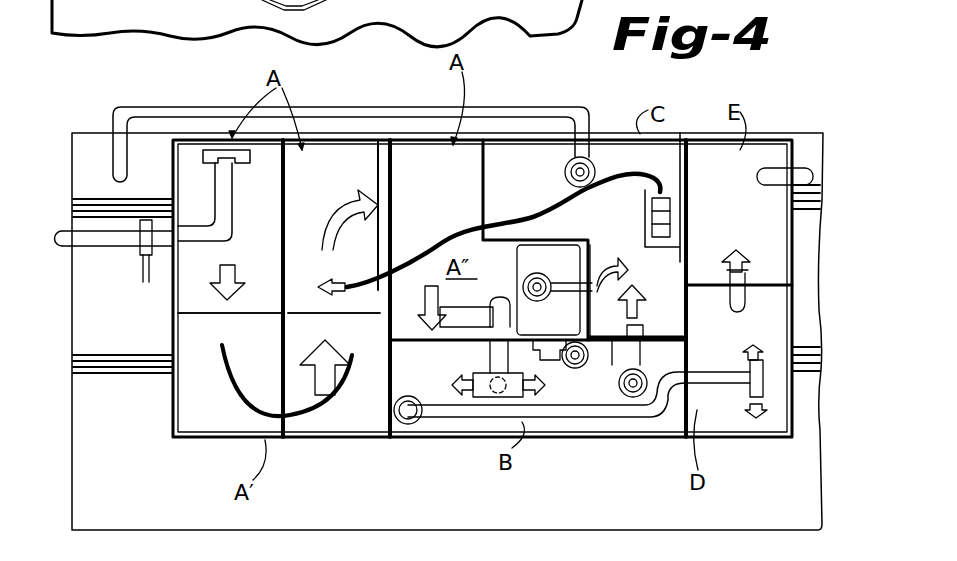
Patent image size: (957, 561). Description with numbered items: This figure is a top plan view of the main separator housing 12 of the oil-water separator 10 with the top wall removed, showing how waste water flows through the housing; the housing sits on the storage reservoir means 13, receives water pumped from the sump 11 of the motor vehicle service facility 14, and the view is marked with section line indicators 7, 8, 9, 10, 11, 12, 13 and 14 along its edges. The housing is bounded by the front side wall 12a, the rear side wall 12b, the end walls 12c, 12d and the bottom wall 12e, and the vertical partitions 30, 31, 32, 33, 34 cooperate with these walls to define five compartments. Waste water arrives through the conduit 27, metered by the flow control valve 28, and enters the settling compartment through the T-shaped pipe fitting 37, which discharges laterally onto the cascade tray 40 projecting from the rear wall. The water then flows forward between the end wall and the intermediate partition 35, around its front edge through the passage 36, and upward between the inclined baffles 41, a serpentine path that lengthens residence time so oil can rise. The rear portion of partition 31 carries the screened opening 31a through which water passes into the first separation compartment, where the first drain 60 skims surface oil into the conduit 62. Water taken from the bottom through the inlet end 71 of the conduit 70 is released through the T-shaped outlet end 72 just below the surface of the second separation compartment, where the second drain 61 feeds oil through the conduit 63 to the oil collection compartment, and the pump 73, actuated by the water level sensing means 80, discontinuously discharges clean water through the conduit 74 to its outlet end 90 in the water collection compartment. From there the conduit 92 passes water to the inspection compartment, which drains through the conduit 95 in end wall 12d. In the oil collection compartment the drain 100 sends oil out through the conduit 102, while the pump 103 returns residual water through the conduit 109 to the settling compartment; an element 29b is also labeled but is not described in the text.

The section line 7- 7 is at (185, 460).
The section line 8- 8 is at (295, 460).
The section line 9- 9 is at (441, 455).
The oil-water separator 10 is at (593, 483).
The sump 11 is at (605, 460).
The main separator housing 12 is at (171, 432).
The front side wall 12a is at (272, 438).
The rear side wall 12b is at (356, 133).
The left-hand end wall 12c is at (172, 302).
The right-hand end wall 12d is at (775, 270).
The bottom wall 12e is at (455, 175).
The storage reservoir means 13 is at (858, 227).
The motor vehicle service facility 14 is at (858, 430).
The conduit 27 is at (93, 240).
The flow control valve 28 is at (140, 240).
The conduit 29b is at (150, 200).
The partition 30 is at (482, 226).
The partition 31 is at (378, 392).
The screened opening 31a is at (372, 158).
The partition 32 is at (458, 344).
The partition 33 is at (672, 300).
The partition 34 is at (748, 300).
The intermediate partition 35 is at (262, 262).
The passage 36 is at (256, 400).
The T-shaped pipe fitting 37 is at (247, 152).
The cascade tray 40 is at (236, 168).
The baffles 41 is at (258, 349).
The first drain 60 is at (555, 278).
The second drain 61 is at (646, 368).
The conduit 62 is at (568, 296).
The conduit 63 is at (645, 318).
The conduit 70 is at (496, 307).
The inlet end 71 is at (430, 305).
The outlet end 72 is at (480, 420).
The pump 73 is at (365, 415).
The conduit 74 is at (555, 418).
The water level sensing means 80 is at (580, 366).
The outlet end 90 is at (750, 386).
The conduit 92 is at (742, 310).
The conduit 95 is at (756, 182).
The drain 100 is at (589, 160).
The conduit 102 is at (540, 107).
The pump 103 is at (648, 232).
The conduit 109 is at (362, 282).